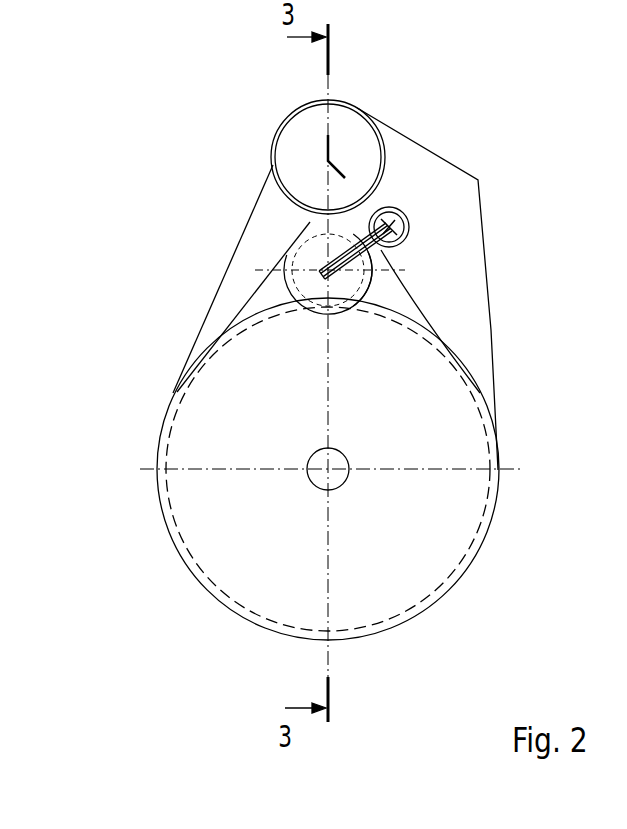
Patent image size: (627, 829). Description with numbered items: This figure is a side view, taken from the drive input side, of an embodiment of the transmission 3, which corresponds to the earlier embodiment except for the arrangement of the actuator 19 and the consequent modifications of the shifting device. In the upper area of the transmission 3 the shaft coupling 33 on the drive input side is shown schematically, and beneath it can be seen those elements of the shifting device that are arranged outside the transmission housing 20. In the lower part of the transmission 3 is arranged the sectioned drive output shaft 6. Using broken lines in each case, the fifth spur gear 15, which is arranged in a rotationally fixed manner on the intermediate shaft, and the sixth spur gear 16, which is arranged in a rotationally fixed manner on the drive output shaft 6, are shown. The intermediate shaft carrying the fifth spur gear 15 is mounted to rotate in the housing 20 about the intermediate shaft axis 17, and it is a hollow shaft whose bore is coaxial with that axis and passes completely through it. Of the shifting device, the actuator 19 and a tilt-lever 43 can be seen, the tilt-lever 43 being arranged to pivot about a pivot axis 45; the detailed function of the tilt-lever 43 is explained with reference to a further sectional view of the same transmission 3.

The transmission 3 is at (180, 182).
The shaft coupling 33 is at (278, 128).
The transmission housing 20 is at (197, 335).
The sixth spur gear 16 is at (180, 395).
The drive output shaft 6 is at (308, 480).
The tilt-lever 43 is at (312, 231).
The intermediate shaft axis 17 is at (305, 244).
The fifth spur gear 15 is at (363, 277).
The pivot axis 45 is at (395, 247).
The actuator 19 is at (398, 208).